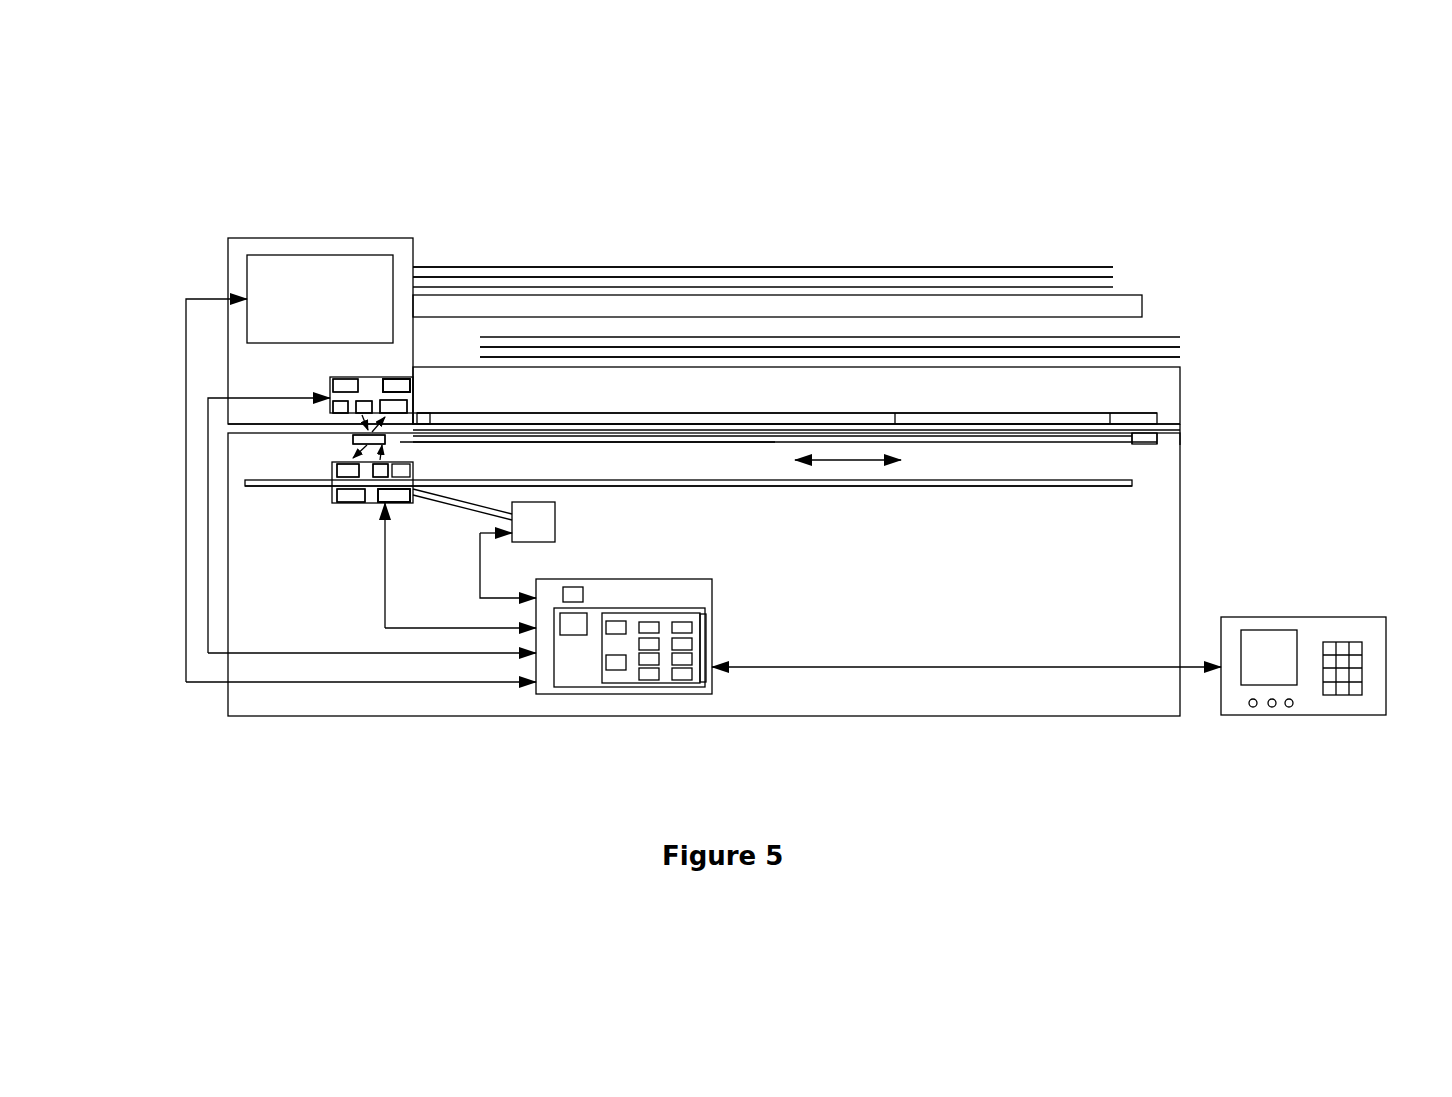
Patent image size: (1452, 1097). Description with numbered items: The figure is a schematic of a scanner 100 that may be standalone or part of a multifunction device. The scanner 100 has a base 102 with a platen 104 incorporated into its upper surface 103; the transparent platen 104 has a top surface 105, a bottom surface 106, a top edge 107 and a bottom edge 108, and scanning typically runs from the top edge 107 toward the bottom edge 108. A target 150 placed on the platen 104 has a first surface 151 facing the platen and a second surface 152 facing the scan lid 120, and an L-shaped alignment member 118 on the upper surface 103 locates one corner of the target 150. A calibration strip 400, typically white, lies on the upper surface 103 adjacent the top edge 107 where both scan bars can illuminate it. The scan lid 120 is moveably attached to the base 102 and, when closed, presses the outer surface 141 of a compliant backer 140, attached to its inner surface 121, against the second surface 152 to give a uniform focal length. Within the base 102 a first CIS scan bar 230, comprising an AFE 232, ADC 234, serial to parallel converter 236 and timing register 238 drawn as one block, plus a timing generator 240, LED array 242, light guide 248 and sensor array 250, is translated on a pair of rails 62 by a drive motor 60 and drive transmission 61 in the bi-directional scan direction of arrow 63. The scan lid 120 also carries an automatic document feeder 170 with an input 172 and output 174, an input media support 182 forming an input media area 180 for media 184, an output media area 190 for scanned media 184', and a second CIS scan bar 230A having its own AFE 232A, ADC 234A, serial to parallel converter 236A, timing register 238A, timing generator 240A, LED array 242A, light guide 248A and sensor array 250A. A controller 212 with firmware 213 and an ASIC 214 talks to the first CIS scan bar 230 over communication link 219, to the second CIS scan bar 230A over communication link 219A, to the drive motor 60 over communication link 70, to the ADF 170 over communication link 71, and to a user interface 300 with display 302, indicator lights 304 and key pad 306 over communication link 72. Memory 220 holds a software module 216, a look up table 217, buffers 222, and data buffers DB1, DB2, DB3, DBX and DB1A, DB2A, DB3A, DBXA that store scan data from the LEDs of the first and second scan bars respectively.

The scanner 100 is at (1080, 190).
The automatic document feeder 170 is at (227, 267).
The input of ADF 172 is at (414, 267).
The output of ADF 174 is at (414, 351).
The input media area 180 is at (665, 258).
The input media support 182 is at (1142, 305).
The media 184 is at (763, 252).
The scanned media 184' is at (875, 339).
The output media area 190 is at (1157, 331).
The scan lid 120 is at (1182, 392).
The inner surface of scan lid 121 is at (253, 424).
The base 102 is at (1182, 578).
The upper surface 103 is at (1180, 433).
The bottom edge of platen 108 is at (1160, 440).
The bottom surface of platen 106 is at (1140, 445).
The top surface of platen 105 is at (1150, 445).
The alignment member 118 is at (416, 413).
The top edge of platen 107 is at (413, 447).
The outer surface of backer 141 is at (657, 423).
The backer 140 is at (800, 420).
The second surface of target 152 is at (896, 423).
The target 150 is at (1035, 428).
The first surface of target 151 is at (962, 436).
The platen 104 is at (775, 443).
The arrow 63 is at (847, 462).
The rails 62 is at (940, 486).
The drive transmission 61 is at (507, 480).
The drive motor 60 is at (555, 512).
The communication link 70 is at (480, 568).
The communication link 71 is at (186, 393).
The communication link 219 is at (385, 612).
The communication link 219A is at (348, 653).
The controller 212 is at (572, 579).
The firmware 213 is at (563, 587).
The ASIC 214 is at (577, 636).
The software module 216 is at (612, 670).
The look up table 217 is at (613, 620).
The memory 220 is at (663, 614).
The buffers 222 is at (686, 614).
The data buffer DB1 is at (693, 624).
The data buffer DB2 is at (693, 644).
The data buffer DB3 is at (693, 660).
The data buffer DBX is at (688, 681).
The data buffer DB1A is at (683, 681).
The data buffer DB2A is at (669, 681).
The data buffer DB3A is at (640, 666).
The data buffer DBXA is at (655, 681).
The communication link 72 is at (915, 666).
The user interface 300 is at (1303, 617).
The display 302 is at (1268, 630).
The indicator lights 304 is at (1292, 705).
The key pad 306 is at (1362, 668).
The second CIS scan bar 230A is at (330, 395).
The LED array 242A is at (334, 378).
The timing generator 240A is at (343, 378).
The light guide 248A is at (356, 378).
The sensor array 250A is at (372, 375).
The AFE 232A is at (393, 377).
The ADC 234A is at (396, 385).
The serial to parallel converter 236A is at (396, 385).
The timing register 238A is at (396, 385).
The LED array 242 is at (413, 462).
The calibration strip 400 is at (357, 440).
The first CIS scan bar 230 is at (332, 490).
The timing generator 240 is at (332, 500).
The light guide 248 is at (382, 477).
The sensor array 250 is at (333, 463).
The AFE 232 is at (390, 495).
The ADC 234 is at (394, 495).
The serial to parallel converter 236 is at (394, 495).
The timing register 238 is at (394, 495).